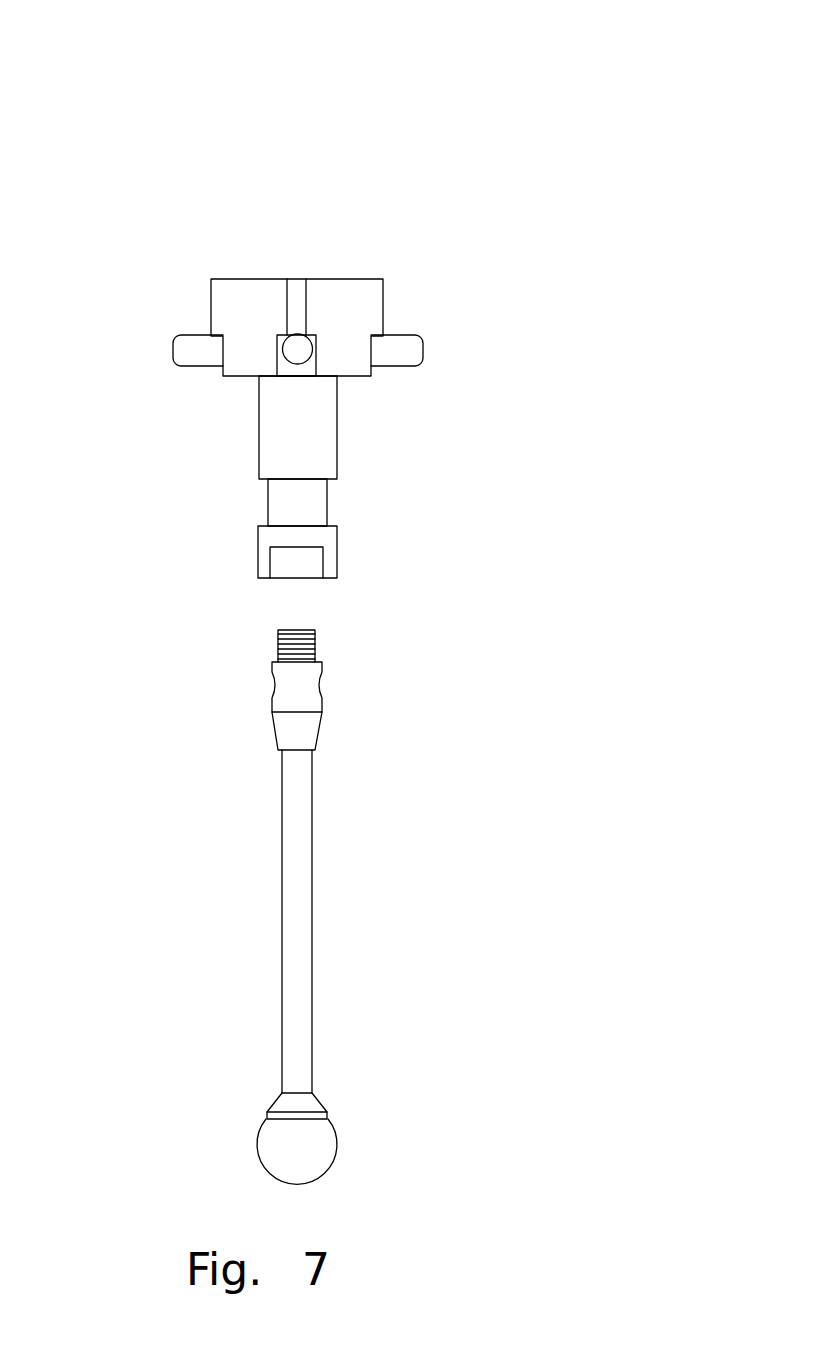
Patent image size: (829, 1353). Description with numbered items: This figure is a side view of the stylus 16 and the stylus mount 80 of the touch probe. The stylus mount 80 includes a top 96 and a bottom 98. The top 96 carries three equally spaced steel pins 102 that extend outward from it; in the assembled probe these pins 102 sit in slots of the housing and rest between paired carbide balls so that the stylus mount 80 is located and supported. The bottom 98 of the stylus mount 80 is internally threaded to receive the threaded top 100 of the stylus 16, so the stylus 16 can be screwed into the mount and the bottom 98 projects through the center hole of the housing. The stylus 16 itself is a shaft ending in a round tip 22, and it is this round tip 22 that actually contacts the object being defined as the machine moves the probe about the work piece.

The stylus mount 80 is at (353, 592).
The top 96 is at (242, 278).
The bottom 98 is at (337, 569).
The threaded top 100 is at (278, 643).
The steel pins 102 is at (173, 356).
The stylus 16 is at (295, 926).
The round tip 22 is at (337, 1142).